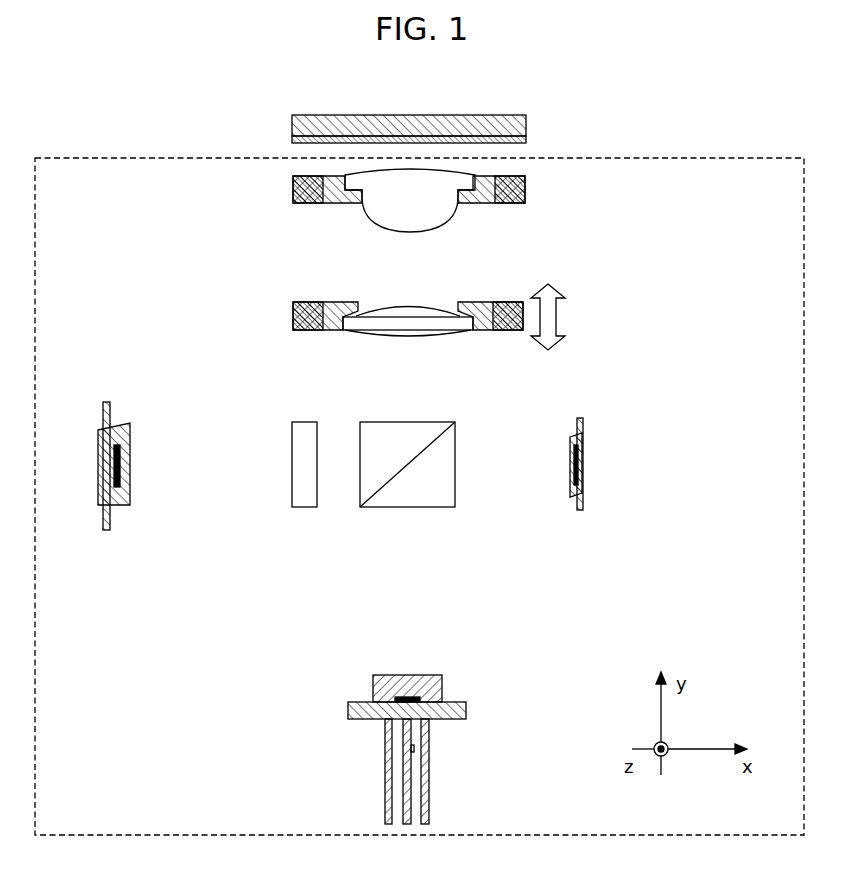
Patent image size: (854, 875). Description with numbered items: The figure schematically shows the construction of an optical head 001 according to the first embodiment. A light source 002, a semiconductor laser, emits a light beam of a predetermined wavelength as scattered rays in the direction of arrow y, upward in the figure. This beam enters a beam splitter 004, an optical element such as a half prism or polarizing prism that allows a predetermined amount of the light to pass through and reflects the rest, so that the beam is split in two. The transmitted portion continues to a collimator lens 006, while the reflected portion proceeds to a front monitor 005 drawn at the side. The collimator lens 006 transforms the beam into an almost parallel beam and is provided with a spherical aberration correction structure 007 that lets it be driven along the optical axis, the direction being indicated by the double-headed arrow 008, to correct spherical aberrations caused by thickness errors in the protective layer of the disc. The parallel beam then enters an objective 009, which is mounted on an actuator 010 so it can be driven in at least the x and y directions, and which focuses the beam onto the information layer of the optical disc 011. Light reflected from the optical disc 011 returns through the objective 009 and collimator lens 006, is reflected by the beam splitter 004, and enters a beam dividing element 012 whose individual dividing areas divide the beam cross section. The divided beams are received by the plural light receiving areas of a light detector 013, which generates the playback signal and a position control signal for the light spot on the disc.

The optical head 001 is at (715, 158).
The light source 002 is at (466, 710).
The beam splitter 004 is at (410, 507).
The front monitor 005 is at (580, 510).
The collimator lens 006 is at (423, 331).
The spherical aberration correction structure 007 is at (293, 320).
The movement direction of collimator lens 008 is at (566, 318).
The objective 009 is at (420, 228).
The actuator 010 is at (525, 190).
The optical disc 011 is at (526, 128).
The beam dividing element 012 is at (305, 507).
The light detector 013 is at (106, 530).